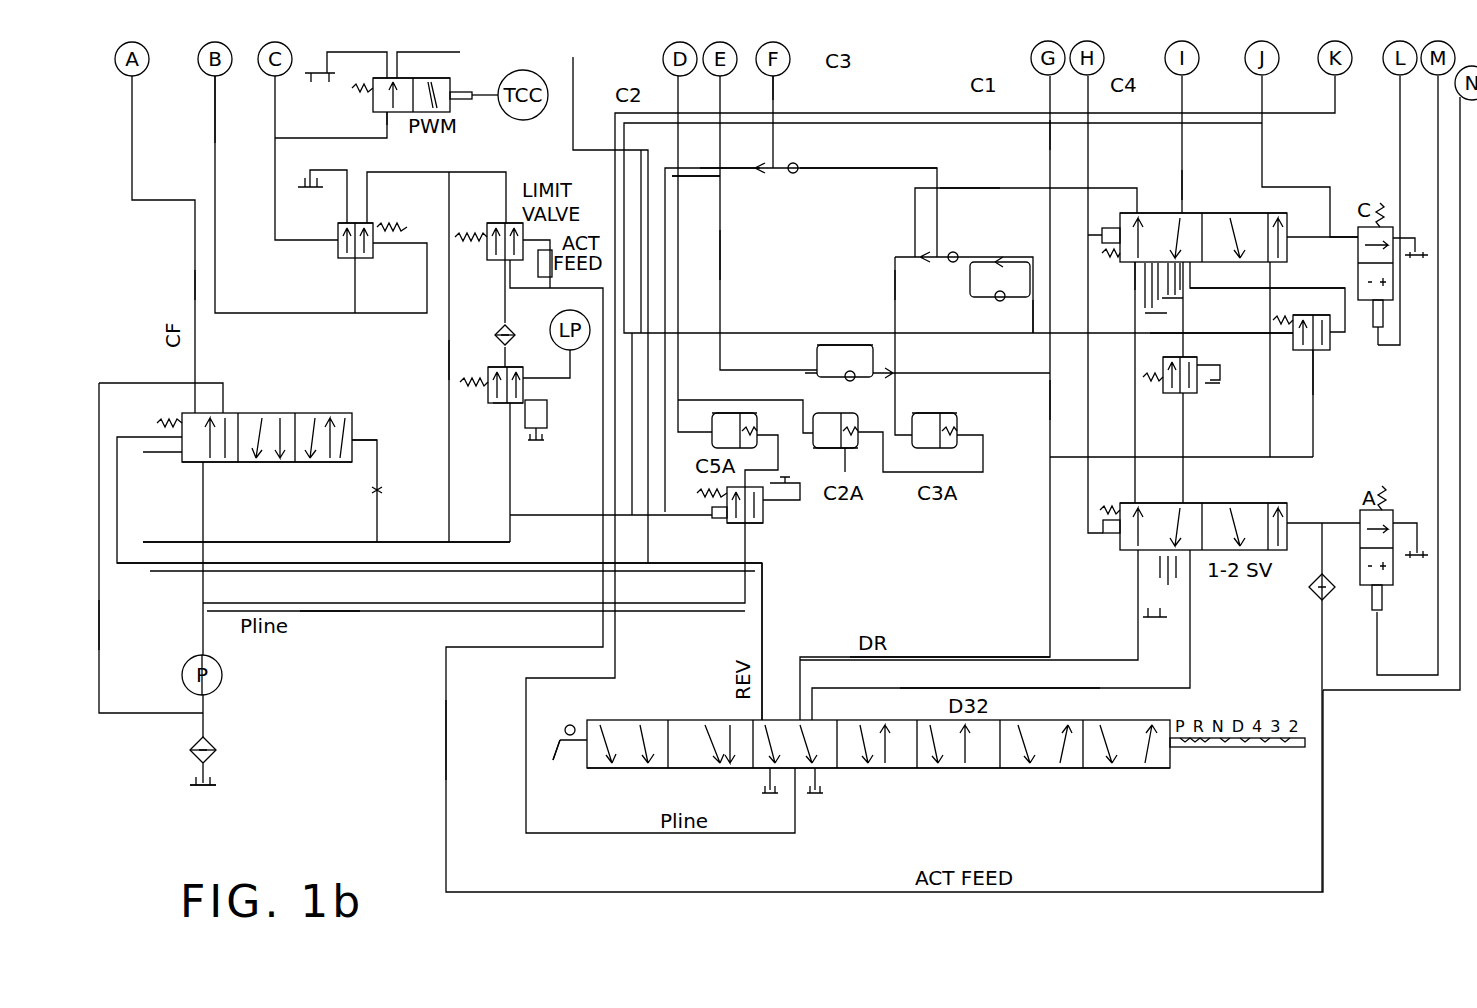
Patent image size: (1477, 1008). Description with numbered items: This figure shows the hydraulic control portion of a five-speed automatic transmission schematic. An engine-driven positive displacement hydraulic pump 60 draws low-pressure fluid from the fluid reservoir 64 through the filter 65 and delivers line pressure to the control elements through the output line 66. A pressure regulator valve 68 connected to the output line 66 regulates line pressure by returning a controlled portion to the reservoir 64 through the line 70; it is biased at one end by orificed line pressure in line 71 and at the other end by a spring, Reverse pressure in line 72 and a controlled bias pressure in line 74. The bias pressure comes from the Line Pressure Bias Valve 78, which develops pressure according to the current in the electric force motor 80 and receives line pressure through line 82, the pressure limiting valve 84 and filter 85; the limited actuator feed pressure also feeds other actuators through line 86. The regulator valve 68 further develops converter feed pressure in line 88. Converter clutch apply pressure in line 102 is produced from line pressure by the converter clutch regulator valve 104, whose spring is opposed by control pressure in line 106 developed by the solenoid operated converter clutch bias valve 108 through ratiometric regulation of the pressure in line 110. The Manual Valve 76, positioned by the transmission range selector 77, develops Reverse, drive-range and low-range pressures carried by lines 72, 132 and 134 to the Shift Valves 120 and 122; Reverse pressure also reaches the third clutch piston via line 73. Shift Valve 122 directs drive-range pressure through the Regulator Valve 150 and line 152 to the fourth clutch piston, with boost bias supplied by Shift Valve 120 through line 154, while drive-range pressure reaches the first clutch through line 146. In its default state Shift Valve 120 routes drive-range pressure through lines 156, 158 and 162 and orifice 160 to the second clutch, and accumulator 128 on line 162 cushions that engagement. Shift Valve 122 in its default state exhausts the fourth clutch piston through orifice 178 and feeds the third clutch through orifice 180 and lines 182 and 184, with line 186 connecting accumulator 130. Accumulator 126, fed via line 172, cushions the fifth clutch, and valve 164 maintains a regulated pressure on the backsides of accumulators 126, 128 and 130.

The positive displacement hydraulic pump 60 is at (222, 675).
The fluid reservoir 64 is at (208, 790).
The filter 65 is at (218, 748).
The output line 66 is at (330, 614).
The pressure regulator valve 68 is at (275, 465).
The line 70 is at (105, 623).
The line 71 is at (375, 440).
The line 72 is at (745, 170).
The line 73 is at (777, 92).
The line 74 is at (1192, 335).
The Manual Valve 76 is at (878, 799).
The transmission range selector 77 is at (560, 745).
The Line Pressure Bias Valve 78 is at (493, 403).
The electric force motor 80 is at (565, 392).
The line 82 is at (449, 360).
The pressure limiting valve 84 is at (482, 262).
The filter 85 is at (490, 338).
The line 86 is at (443, 740).
The line 88 is at (192, 287).
The line 102 is at (210, 143).
The TCC Regulator Valve 104 is at (345, 262).
The line 106 is at (355, 137).
The TCC Bias Valve 108 is at (397, 116).
The line 110 is at (578, 105).
The Shift Valve 120 is at (1283, 512).
The Shift Valve 122 is at (1240, 212).
The accumulator 126 is at (745, 413).
The accumulator 128 is at (857, 448).
The accumulator 130 is at (947, 415).
The DR pressure supply line 132 is at (1313, 393).
The line 134 is at (1007, 688).
The line 146 is at (1045, 137).
The Regulator Valve 150 is at (1320, 352).
The line 152 is at (1178, 185).
The line 154 is at (1268, 393).
The line 156 is at (1140, 410).
The line 158 is at (1015, 395).
The orifice 160 is at (847, 345).
The line 162 is at (725, 258).
The valve 164 is at (765, 523).
The line 172 is at (677, 185).
The orifice 178 is at (1192, 287).
The orifice 180 is at (1133, 277).
The line 182 is at (967, 192).
The line 184 is at (835, 165).
The line 186 is at (900, 283).